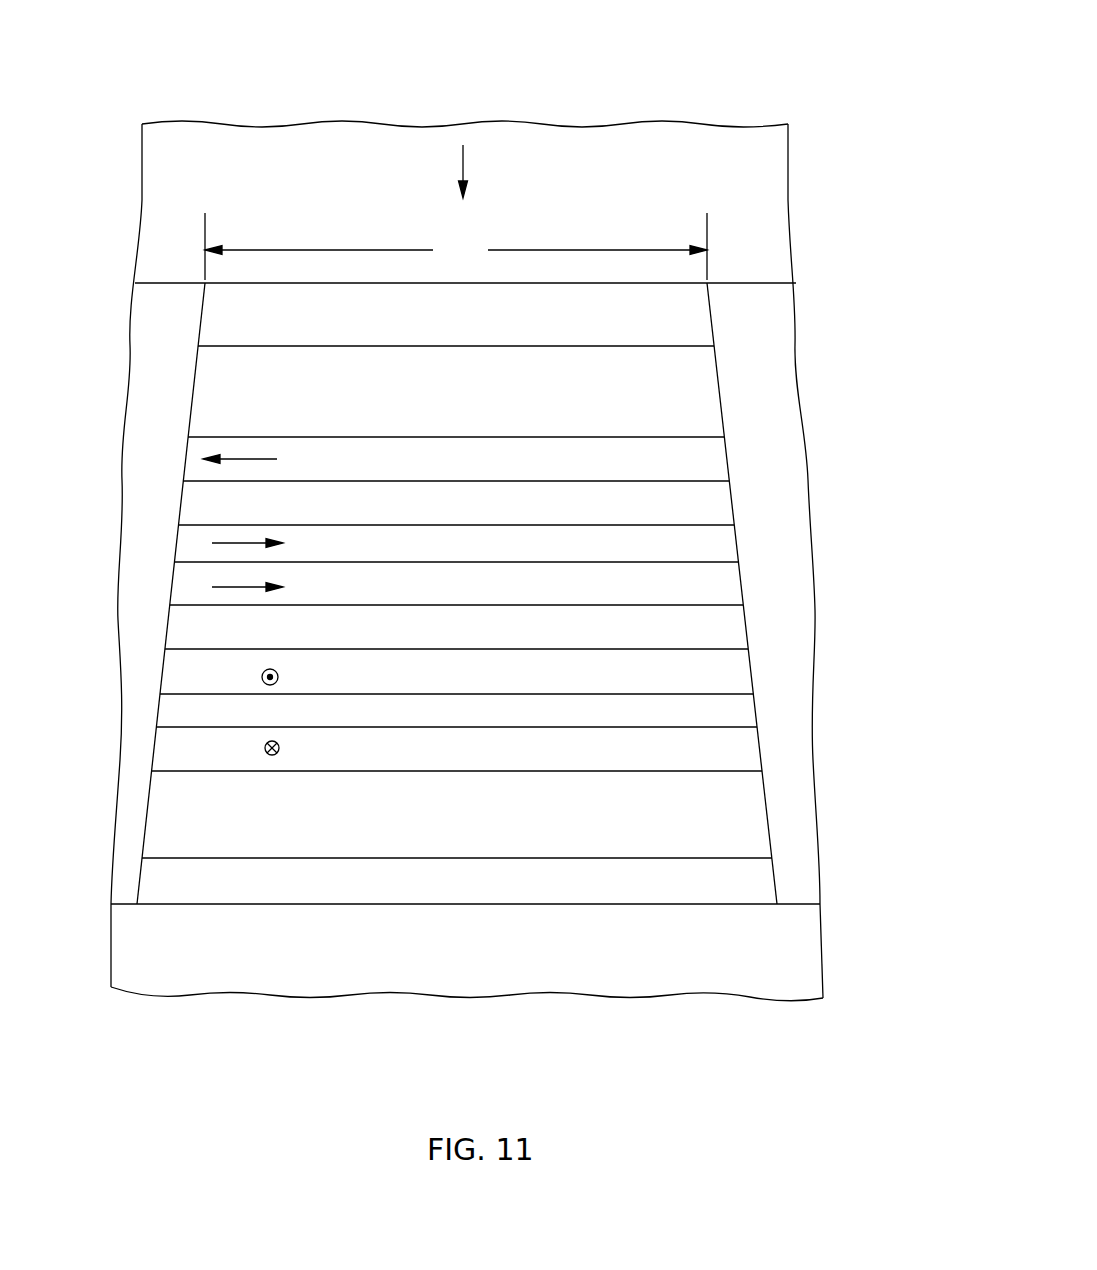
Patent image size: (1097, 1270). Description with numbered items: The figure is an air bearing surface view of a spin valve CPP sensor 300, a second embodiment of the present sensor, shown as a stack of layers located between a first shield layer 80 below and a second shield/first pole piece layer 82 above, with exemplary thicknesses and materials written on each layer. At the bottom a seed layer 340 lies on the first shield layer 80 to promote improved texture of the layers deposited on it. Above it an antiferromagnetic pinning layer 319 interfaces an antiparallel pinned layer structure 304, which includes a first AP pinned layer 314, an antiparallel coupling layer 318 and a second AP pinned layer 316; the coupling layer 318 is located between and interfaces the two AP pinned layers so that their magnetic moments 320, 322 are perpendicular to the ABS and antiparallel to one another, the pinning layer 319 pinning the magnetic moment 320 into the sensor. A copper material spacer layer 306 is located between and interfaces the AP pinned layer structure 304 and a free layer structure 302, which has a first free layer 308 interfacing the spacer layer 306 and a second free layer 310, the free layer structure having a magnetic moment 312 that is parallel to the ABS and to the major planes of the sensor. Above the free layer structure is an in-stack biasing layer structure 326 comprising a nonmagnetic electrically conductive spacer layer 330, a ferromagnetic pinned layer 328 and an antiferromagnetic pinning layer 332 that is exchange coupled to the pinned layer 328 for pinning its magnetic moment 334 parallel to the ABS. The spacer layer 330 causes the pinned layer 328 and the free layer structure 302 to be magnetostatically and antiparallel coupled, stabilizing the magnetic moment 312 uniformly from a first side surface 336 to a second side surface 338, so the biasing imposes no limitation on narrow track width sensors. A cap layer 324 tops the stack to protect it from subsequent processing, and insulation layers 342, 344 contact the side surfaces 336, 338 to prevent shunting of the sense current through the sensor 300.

The spin valve CPP sensor 300 is at (865, 903).
The in-stack biasing layer structure 326 is at (40, 525).
The antiparallel (AP) pinned layer structure 304 is at (62, 650).
The free layer structure 302 is at (55, 525).
The second shield / first pole piece layer 82 is at (617, 189).
The first shield layer 80 is at (689, 969).
The cap layer 324 is at (692, 336).
The antiferromagnetic (AFM) pinning layer 332 is at (694, 401).
The ferromagnetic pinned layer 328 is at (694, 469).
The nonmagnetic electrically conductive spacer layer 330 is at (694, 516).
The second free layer (F2) 310 is at (694, 558).
The first free layer (F1) 308 is at (694, 596).
The material spacer layer (S) 306 is at (694, 638).
The second AP pinned layer (AP2) 316 is at (694, 686).
The antiparallel coupling (APC) layer 318 is at (694, 724).
The first AP pinned layer (AP1) 314 is at (694, 763).
The antiferromagnetic (AFM) pinning layer 319 is at (694, 828).
The seed layer (SL) 340 is at (694, 894).
The insulation layer 342 is at (181, 399).
The insulation layer 344 is at (776, 413).
The magnetic moment of pinned layer 334 is at (249, 458).
The first side surface 336 is at (181, 496).
The second side surface 338 is at (733, 506).
The magnetic moment of free layer structure 312 is at (228, 543).
The magnetic moment of second AP pinned layer 322 is at (262, 678).
The magnetic moment of first AP pinned layer 320 is at (265, 748).